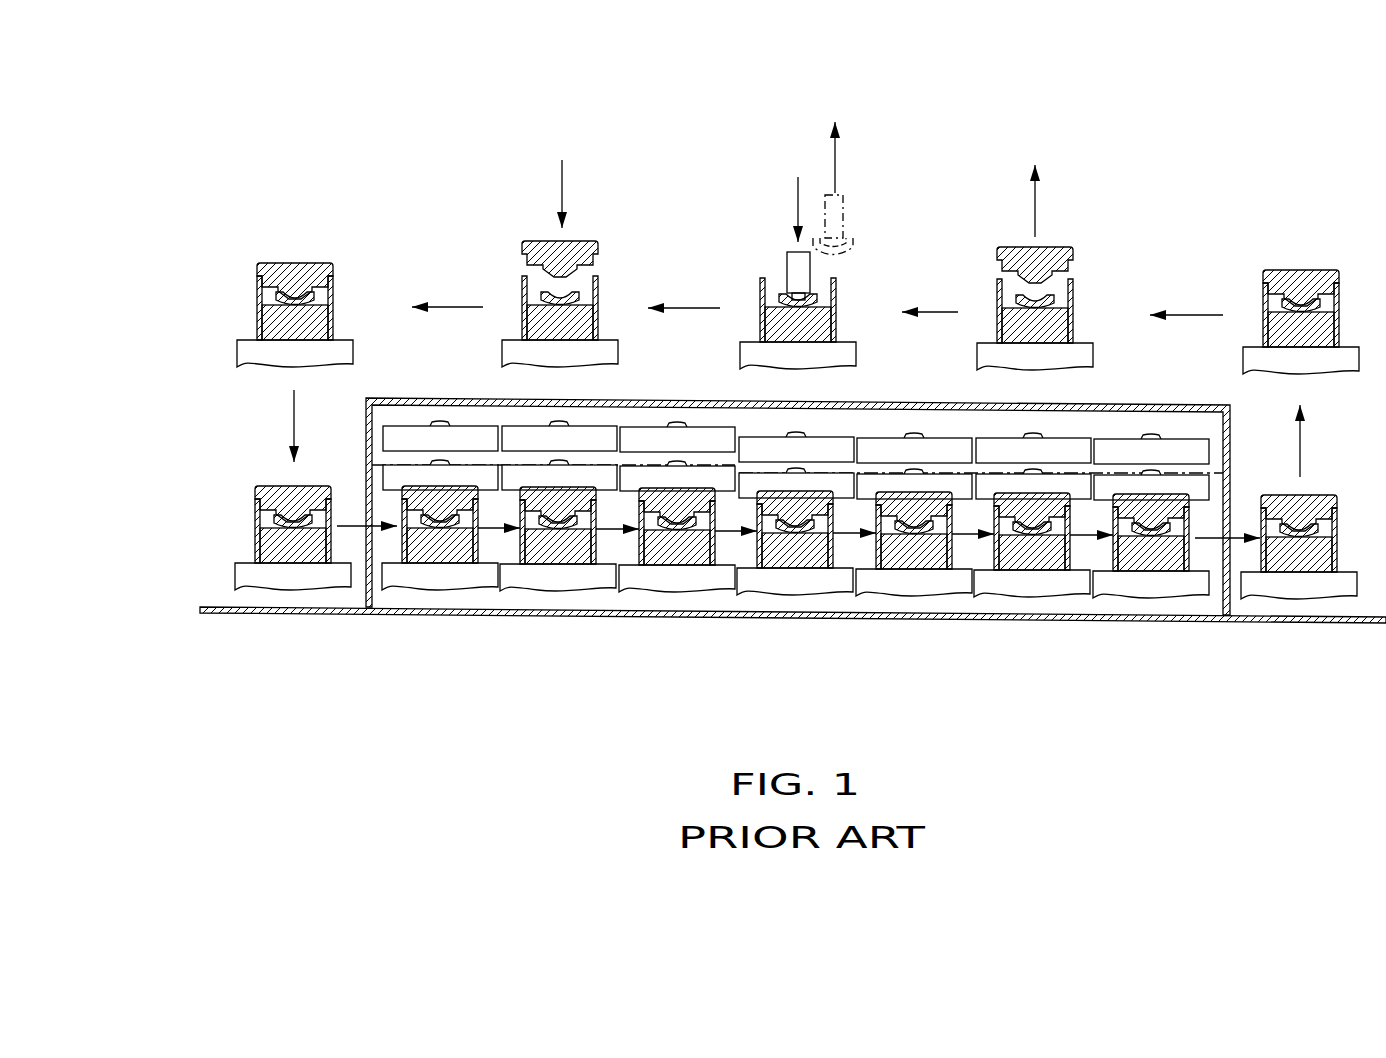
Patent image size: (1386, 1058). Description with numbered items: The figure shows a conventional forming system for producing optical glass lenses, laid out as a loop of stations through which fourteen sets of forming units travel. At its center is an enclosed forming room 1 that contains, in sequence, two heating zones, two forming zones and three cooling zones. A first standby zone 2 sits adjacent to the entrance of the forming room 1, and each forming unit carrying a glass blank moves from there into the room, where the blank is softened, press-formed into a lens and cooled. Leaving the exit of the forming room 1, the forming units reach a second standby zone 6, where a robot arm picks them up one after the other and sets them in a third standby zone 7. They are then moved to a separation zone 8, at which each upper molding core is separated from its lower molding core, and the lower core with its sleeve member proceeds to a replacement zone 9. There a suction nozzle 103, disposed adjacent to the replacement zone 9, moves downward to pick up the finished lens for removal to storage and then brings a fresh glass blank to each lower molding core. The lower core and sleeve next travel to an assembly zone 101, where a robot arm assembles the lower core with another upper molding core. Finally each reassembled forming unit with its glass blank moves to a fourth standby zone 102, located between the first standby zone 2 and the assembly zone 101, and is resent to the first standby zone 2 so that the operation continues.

The forming room 1 is at (1192, 626).
The first standby zone 2 is at (297, 593).
The second standby zone 6 is at (1316, 602).
The third standby zone 7 is at (1356, 343).
The separation zone 8 is at (1086, 342).
The replacement zone 9 is at (850, 341).
The assembly zone 101 is at (615, 338).
The fourth standby zone 102 is at (235, 348).
The suction nozzle 103 is at (787, 268).